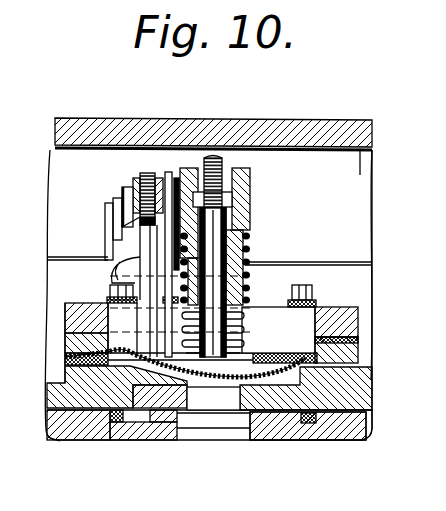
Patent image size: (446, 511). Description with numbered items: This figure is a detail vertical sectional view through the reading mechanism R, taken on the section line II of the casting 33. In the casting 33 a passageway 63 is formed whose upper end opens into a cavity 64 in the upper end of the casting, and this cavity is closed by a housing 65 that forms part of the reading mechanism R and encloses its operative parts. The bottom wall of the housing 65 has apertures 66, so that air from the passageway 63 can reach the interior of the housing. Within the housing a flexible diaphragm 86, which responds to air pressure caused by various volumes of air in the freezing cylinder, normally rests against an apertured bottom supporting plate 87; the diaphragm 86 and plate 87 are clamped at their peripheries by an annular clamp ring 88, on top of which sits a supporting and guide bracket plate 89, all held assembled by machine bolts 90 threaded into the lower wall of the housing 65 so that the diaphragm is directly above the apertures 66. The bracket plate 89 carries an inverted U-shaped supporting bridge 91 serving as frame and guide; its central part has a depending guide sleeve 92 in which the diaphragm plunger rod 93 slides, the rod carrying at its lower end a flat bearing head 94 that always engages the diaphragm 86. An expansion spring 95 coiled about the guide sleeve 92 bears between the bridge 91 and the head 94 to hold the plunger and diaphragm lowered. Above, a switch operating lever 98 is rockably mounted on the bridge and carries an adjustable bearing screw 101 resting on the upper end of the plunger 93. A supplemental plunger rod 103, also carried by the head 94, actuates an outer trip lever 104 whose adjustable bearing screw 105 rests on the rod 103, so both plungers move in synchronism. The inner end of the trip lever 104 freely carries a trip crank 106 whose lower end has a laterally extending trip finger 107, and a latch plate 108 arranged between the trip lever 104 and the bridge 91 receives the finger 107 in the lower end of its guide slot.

The reading mechanism R is at (331, 124).
The latch plate 108 is at (170, 168).
The adjustable bearing screw 105 is at (153, 172).
The adjustable bearing screw 101 is at (224, 160).
The outer trip lever 104 is at (131, 187).
The switch operating lever 98 is at (251, 183).
The inverted U-shaped supporting bridge 91 is at (252, 212).
The trip crank 106 is at (112, 216).
The diaphragm plunger rod 93 is at (250, 240).
The guide sleeve 92 is at (250, 257).
The expansion spring 95 is at (250, 273).
The housing 65 is at (118, 420).
The supplemental plunger rod 103 is at (140, 258).
The machine bolts 90 is at (110, 292).
The trip finger 107 is at (130, 303).
The flexible diaphragm 86 is at (303, 362).
The supporting and guide bracket plate 89 is at (358, 325).
The annular clamp ring 88 is at (359, 347).
The flat bearing head 94 is at (250, 364).
The bottom supporting plate 87 is at (256, 372).
The casting 33 is at (364, 428).
The section line II is at (58, 442).
The cavity 64 is at (155, 418).
The apertures 66 is at (212, 393).
The passageway 63 is at (240, 428).